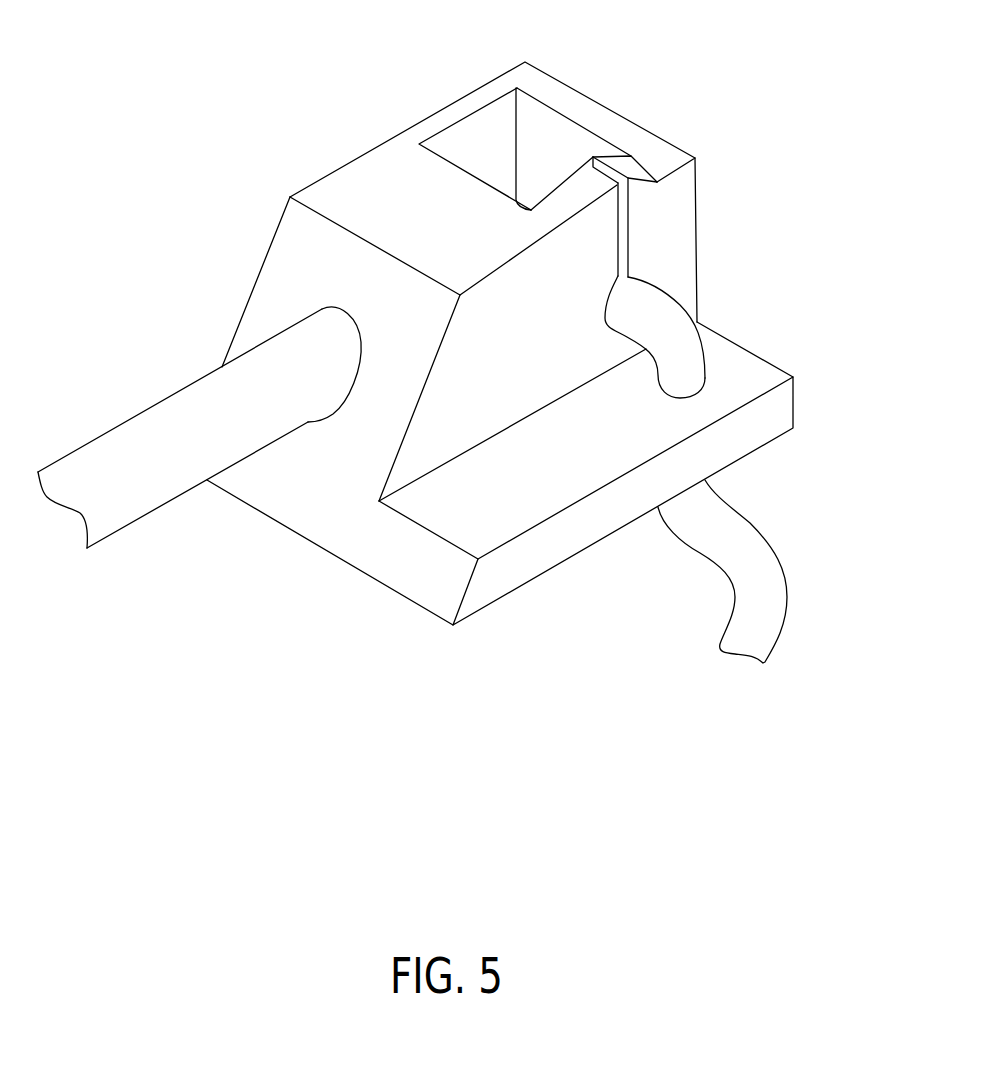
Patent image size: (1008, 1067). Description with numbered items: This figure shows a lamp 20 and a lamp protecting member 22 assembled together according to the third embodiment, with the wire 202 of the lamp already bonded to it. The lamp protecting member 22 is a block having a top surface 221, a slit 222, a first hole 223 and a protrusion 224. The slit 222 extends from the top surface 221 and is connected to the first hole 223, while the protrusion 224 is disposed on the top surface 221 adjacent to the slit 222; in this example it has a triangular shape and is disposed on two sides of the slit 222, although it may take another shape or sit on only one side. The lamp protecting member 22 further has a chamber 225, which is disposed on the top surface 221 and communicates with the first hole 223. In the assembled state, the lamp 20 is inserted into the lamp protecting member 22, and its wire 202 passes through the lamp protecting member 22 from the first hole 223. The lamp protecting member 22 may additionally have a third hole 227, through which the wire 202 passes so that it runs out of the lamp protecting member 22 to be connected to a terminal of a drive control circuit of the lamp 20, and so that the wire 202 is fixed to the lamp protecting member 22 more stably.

The lamp 20 is at (140, 507).
The lamp protecting member 22 is at (408, 600).
The top surface 221 is at (320, 187).
The slit 222 is at (630, 215).
The first hole 223 is at (598, 323).
The protrusion 224 is at (606, 160).
The chamber 225 is at (475, 147).
The third hole 227 is at (718, 375).
The wire 202 is at (760, 553).